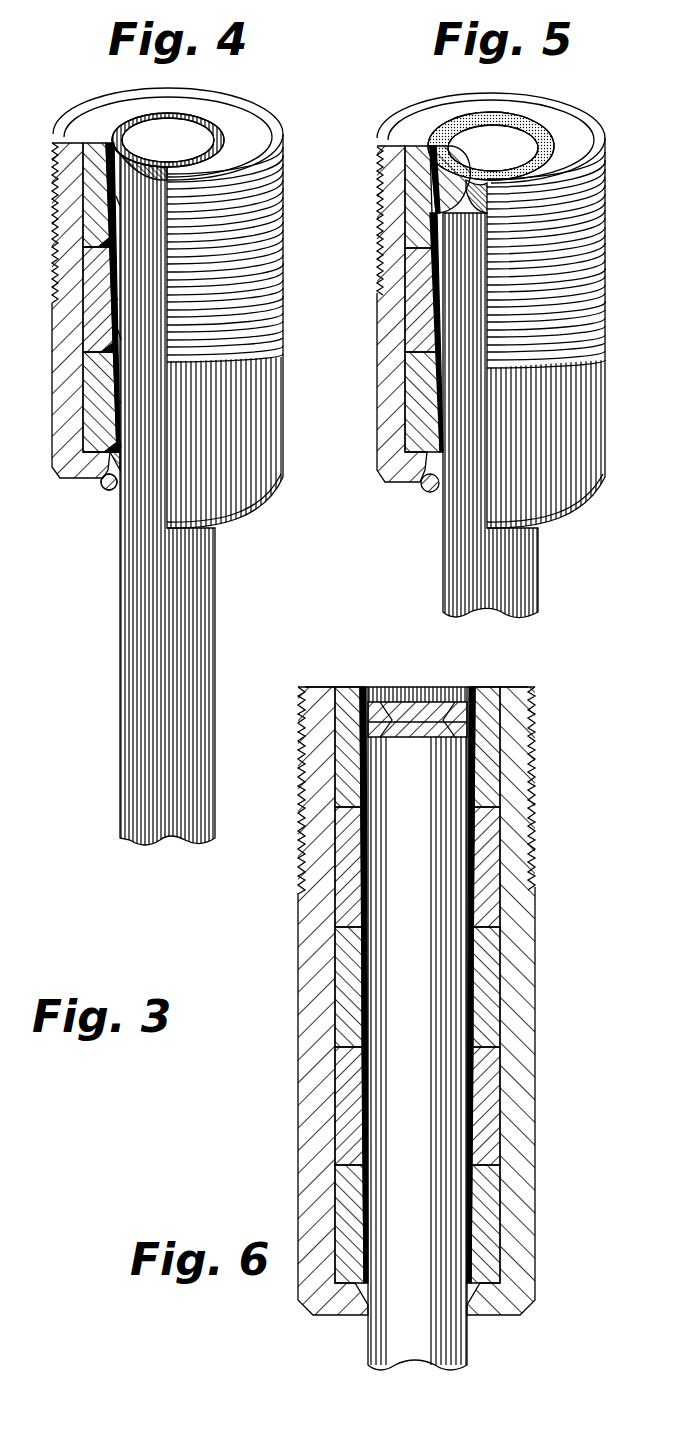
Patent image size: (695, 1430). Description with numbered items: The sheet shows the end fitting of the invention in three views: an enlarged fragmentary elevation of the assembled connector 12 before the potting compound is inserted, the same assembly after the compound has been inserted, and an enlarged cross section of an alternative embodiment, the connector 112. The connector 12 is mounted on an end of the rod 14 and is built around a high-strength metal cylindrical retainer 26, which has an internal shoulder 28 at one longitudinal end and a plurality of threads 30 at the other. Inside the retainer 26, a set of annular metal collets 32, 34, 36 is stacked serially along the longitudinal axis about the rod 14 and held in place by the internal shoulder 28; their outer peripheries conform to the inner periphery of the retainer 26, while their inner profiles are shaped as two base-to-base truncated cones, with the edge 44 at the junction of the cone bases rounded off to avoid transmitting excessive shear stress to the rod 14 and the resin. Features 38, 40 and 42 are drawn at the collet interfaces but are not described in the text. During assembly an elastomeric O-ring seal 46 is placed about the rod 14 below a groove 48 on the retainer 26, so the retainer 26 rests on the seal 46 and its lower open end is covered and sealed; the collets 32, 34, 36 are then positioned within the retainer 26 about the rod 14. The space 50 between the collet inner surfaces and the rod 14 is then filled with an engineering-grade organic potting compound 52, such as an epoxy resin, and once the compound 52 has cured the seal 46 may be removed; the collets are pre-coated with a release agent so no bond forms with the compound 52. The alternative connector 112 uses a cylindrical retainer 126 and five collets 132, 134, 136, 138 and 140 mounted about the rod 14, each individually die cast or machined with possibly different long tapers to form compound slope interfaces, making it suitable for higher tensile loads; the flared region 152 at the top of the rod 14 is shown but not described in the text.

In FIG. 4, the end fitting or connector 12 is at (279, 101).
In FIG. 5, the end fitting or connector 12 is at (601, 101).
In FIG. 4, the rod 14 is at (120, 683).
In FIG. 5, the rod 14 is at (443, 563).
In FIG. 6, the rod 14 is at (372, 1345).
In FIG. 4, the cylindrical retainer 26 is at (263, 498).
In FIG. 5, the cylindrical retainer 26 is at (577, 503).
In FIG. 4, the internal shoulder 28 is at (115, 457).
In FIG. 4, the threads 30 is at (52, 147).
In FIG. 5, the threads 30 is at (377, 160).
In FIG. 4, the collet or ring 32 is at (90, 392).
In FIG. 5, the collet or ring 32 is at (410, 393).
In FIG. 4, the collet or ring 34 is at (90, 287).
In FIG. 5, the collet or ring 34 is at (410, 287).
In FIG. 4, the collet or ring 36 is at (90, 180).
In FIG. 5, the collet or ring 36 is at (417, 198).
In FIG. 4, the spacer ring 38 is at (90, 247).
In FIG. 4, the bevelled edge 40 is at (117, 193).
In FIG. 4, the sealing lip 42 is at (113, 243).
In FIG. 4, the edge 44 is at (118, 200).
In FIG. 4, the O-ring seal 46 is at (112, 490).
In FIG. 5, the O-ring seal 46 is at (428, 495).
In FIG. 4, the groove 48 is at (103, 488).
In FIG. 4, the space 50 is at (117, 147).
In FIG. 5, the potting compound or resin 52 is at (438, 177).
In FIG. 6, the connector or end fitting 112 is at (260, 1164).
In FIG. 6, the cylindrical retainer 126 is at (515, 1303).
In FIG. 6, the collet 132 is at (490, 1213).
In FIG. 6, the collet 134 is at (488, 1100).
In FIG. 6, the collet 136 is at (487, 988).
In FIG. 6, the collet 138 is at (490, 867).
In FIG. 6, the collet 140 is at (493, 773).
In FIG. 6, the flared tube end 152 is at (363, 687).